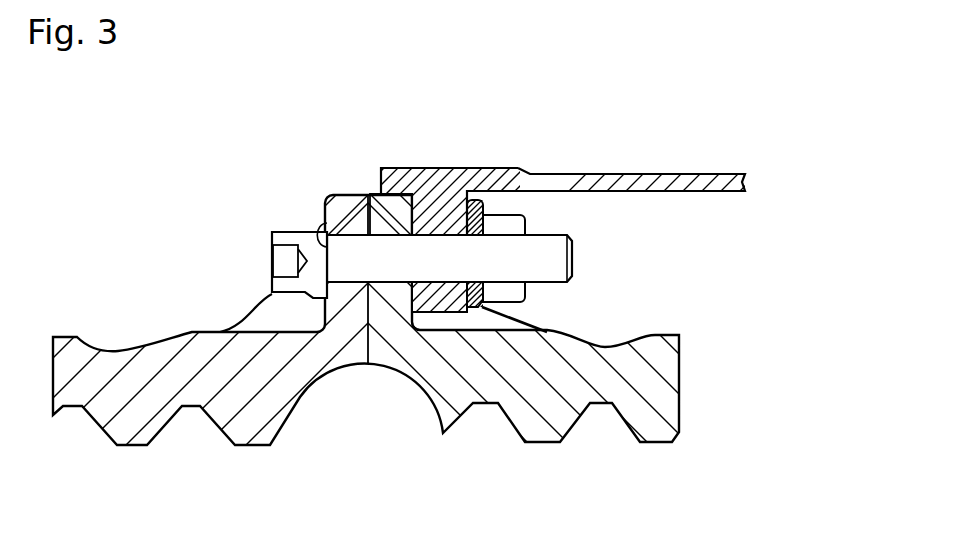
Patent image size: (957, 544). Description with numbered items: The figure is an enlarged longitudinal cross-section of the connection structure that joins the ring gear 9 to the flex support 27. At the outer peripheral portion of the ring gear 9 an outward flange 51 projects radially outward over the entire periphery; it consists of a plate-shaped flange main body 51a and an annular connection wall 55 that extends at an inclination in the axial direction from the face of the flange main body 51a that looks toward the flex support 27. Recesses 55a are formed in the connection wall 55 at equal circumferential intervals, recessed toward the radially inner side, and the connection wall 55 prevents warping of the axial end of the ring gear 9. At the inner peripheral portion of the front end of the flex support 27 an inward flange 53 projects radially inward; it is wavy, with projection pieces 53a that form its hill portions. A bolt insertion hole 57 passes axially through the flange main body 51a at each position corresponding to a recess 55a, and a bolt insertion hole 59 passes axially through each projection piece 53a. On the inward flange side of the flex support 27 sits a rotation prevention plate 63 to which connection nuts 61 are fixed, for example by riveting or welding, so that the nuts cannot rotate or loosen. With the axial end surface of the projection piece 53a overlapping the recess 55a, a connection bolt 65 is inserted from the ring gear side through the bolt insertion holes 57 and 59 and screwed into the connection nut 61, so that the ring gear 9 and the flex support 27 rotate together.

The ring gear 9 is at (681, 407).
The flex support 27 is at (567, 173).
The outward flange 51 is at (370, 193).
The flange main body 51a is at (392, 201).
The inward flange 53 is at (432, 303).
The projection piece 53a is at (525, 294).
The annular connection wall 55 is at (507, 320).
The recess 55a is at (448, 323).
The bolt insertion hole 57 is at (327, 240).
The bolt insertion hole 59 is at (437, 235).
The connection nut 61 is at (525, 215).
The rotation prevention plate 63 is at (488, 200).
The connection bolt 65 is at (272, 260).